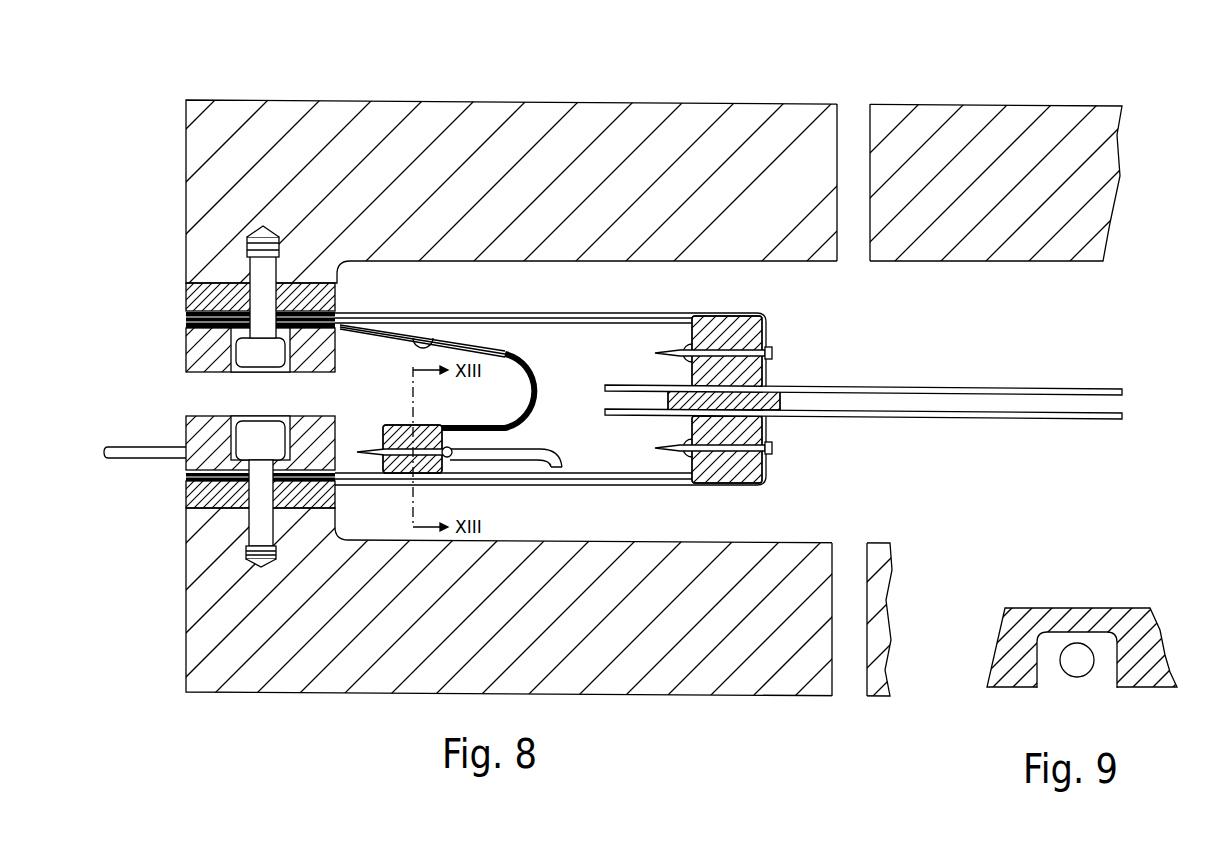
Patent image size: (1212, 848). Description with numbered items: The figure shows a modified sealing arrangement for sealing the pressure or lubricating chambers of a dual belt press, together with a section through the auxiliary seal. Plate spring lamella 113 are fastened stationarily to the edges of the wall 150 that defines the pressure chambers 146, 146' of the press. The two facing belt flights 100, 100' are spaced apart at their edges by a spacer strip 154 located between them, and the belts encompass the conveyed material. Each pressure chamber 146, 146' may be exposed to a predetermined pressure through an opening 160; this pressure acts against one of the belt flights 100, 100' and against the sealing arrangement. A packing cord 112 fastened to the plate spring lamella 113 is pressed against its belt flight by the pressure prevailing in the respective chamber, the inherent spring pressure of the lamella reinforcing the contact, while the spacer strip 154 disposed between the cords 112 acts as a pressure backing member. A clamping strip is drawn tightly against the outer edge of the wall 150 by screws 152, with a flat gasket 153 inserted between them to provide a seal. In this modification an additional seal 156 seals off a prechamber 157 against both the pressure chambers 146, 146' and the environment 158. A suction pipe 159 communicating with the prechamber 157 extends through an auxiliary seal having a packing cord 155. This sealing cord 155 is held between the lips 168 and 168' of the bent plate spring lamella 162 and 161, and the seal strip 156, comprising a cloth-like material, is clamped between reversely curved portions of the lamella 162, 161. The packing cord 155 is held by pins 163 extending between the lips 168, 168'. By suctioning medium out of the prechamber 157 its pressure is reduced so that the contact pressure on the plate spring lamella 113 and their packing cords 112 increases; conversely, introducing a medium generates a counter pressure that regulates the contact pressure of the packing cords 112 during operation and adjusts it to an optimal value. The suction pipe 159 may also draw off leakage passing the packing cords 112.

In FIG. 8, the pressure chamber wall 150 is at (470, 130).
In FIG. 8, the opening 160 is at (862, 147).
In FIG. 8, the flat gasket 153 is at (208, 297).
In FIG. 8, the screw 152 is at (250, 353).
In FIG. 8, the environment 158 is at (203, 403).
In FIG. 8, the suction pipe 159 is at (133, 452).
In FIG. 9, the suction pipe 159 is at (1080, 650).
In FIG. 8, the bent plate spring lamella 162 is at (413, 343).
In FIG. 8, the bent plate spring lamella 161 is at (484, 338).
In FIG. 8, the plate spring lamella 113 is at (590, 309).
In FIG. 8, the seal strip 156 is at (541, 354).
In FIG. 8, the packing cord 112 is at (763, 326).
In FIG. 8, the spacer strip 154 is at (770, 390).
In FIG. 8, the belt flight 100 is at (863, 364).
In FIG. 8, the belt flight 100' is at (866, 438).
In FIG. 8, the pressure chamber 146 is at (944, 295).
In FIG. 8, the pressure chamber 146' is at (930, 495).
In FIG. 8, the prechamber 157 is at (628, 445).
In FIG. 8, the lip 168 is at (395, 426).
In FIG. 8, the lip 168' is at (515, 435).
In FIG. 8, the packing cord 155 is at (425, 430).
In FIG. 9, the packing cord 155 is at (1027, 632).
In FIG. 8, the pin 163 is at (395, 480).